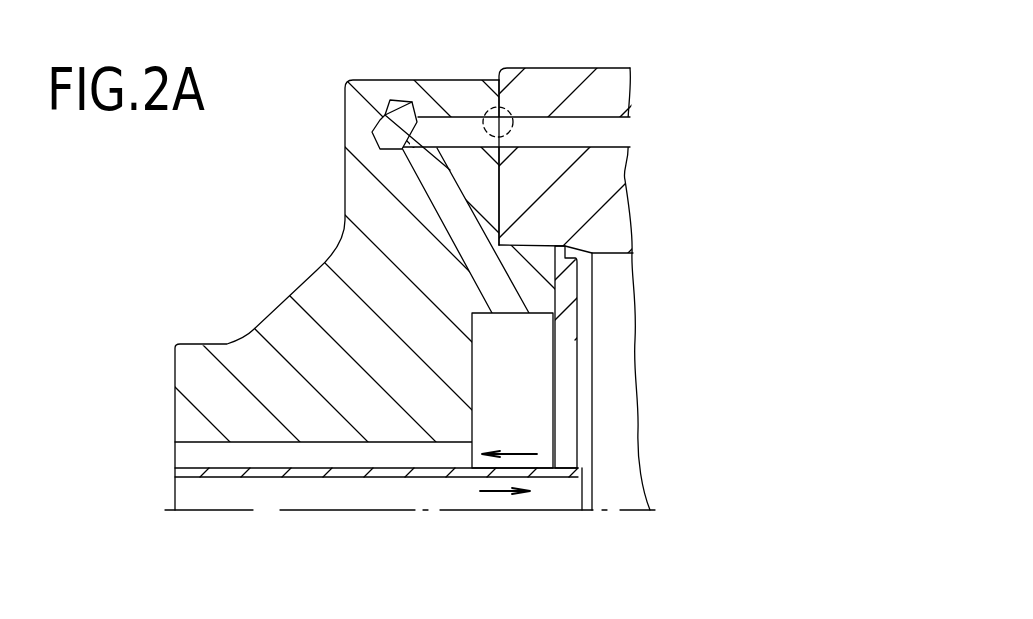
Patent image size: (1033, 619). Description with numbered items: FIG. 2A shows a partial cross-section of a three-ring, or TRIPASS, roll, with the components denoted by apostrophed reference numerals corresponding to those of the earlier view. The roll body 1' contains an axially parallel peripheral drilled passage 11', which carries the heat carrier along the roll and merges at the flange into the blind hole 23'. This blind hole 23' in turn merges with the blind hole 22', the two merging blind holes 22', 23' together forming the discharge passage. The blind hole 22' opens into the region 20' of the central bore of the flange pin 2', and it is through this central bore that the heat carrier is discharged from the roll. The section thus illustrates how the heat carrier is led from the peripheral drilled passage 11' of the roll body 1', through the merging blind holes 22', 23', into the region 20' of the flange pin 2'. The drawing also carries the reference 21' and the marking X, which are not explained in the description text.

The housing 1' is at (603, 255).
The flange portion of housing 11' is at (603, 150).
The cover member 2' is at (461, 290).
The seal 20' is at (552, 275).
The shaft axis 21' is at (409, 543).
The bolt 22' is at (391, 206).
The bolt hole 23' is at (516, 74).
The misalignment gap X is at (510, 107).